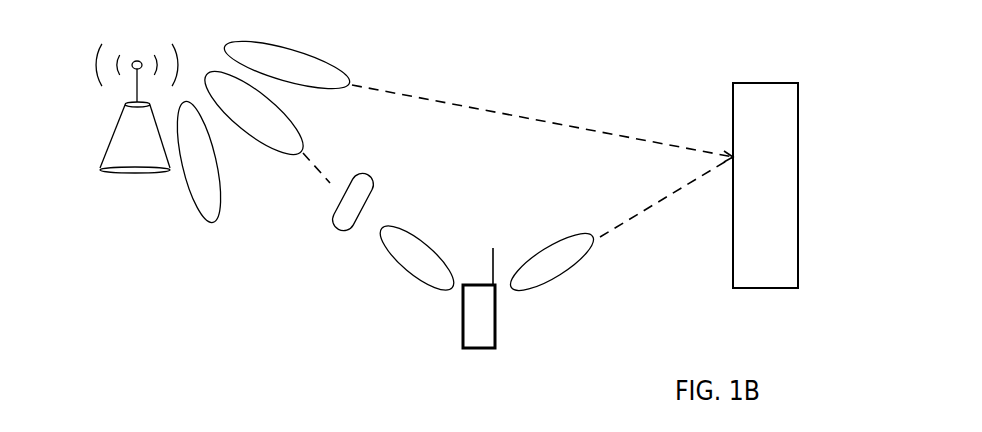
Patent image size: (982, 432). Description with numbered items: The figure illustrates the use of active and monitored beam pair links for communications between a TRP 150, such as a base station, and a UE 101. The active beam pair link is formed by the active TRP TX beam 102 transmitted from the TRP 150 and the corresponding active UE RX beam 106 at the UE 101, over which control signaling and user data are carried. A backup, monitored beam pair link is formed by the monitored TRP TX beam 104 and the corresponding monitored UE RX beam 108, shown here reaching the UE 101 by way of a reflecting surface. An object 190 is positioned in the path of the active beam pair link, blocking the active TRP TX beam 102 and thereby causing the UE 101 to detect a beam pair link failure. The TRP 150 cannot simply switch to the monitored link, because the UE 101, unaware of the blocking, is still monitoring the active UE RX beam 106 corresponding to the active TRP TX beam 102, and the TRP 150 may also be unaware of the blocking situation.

The TRP 150 is at (132, 163).
The active TRP TX beam 102 is at (292, 148).
The monitored TRP TX beam 104 is at (342, 90).
The active UE RX beam 106 is at (402, 267).
The monitored UE RX beam 108 is at (555, 282).
The object 190 is at (367, 193).
The UE 101 is at (463, 323).